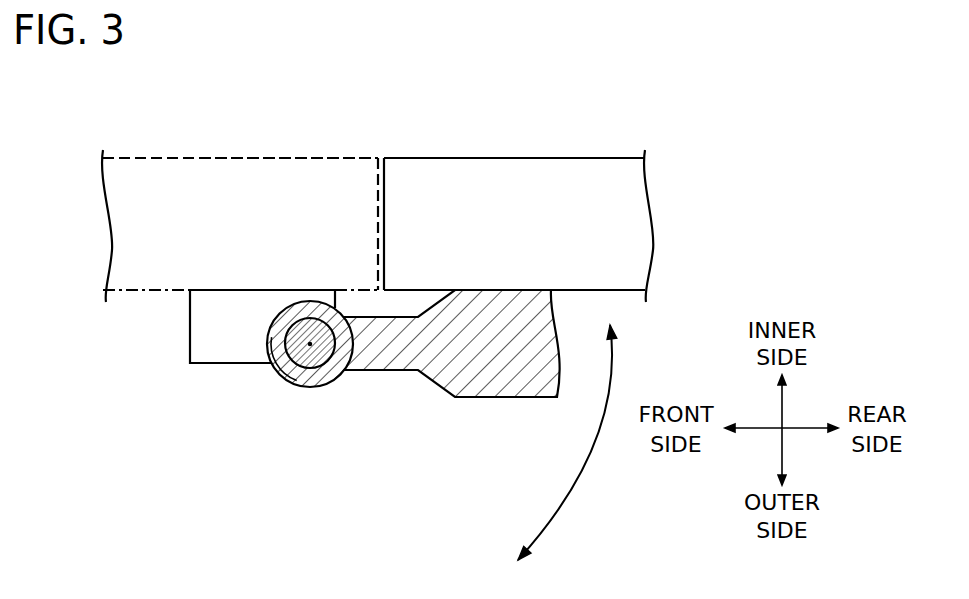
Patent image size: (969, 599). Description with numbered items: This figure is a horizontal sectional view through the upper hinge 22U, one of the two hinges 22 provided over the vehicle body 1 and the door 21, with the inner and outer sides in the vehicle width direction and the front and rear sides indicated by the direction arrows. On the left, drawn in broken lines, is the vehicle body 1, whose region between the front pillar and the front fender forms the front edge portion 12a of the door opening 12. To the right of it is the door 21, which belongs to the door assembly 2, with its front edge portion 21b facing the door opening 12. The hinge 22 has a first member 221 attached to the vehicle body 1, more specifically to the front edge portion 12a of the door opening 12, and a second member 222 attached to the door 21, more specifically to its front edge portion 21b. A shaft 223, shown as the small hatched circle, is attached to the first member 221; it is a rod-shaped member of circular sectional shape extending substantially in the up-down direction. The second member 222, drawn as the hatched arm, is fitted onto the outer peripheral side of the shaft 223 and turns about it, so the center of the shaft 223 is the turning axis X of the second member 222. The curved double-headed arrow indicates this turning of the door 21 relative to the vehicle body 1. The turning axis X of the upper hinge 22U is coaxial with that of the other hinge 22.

The vehicle body 1 is at (136, 158).
The door opening 12 is at (383, 213).
The front edge portion of the door opening 12a is at (297, 192).
The door 2 is at (387, 273).
The door 21 is at (595, 158).
The front edge portion of the door 21b is at (472, 192).
The hinge 22 is at (298, 382).
The upper hinge 22U is at (190, 343).
The first member 221 is at (278, 385).
The second member 222 is at (446, 362).
The shaft 223 is at (320, 363).
The turning axis X is at (309, 346).